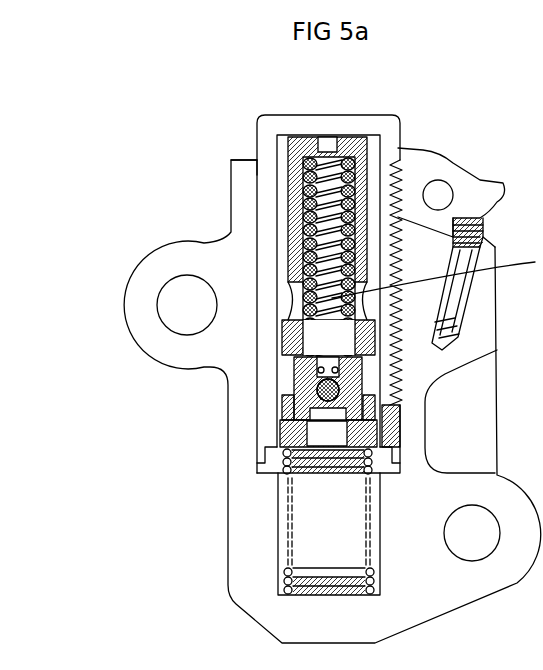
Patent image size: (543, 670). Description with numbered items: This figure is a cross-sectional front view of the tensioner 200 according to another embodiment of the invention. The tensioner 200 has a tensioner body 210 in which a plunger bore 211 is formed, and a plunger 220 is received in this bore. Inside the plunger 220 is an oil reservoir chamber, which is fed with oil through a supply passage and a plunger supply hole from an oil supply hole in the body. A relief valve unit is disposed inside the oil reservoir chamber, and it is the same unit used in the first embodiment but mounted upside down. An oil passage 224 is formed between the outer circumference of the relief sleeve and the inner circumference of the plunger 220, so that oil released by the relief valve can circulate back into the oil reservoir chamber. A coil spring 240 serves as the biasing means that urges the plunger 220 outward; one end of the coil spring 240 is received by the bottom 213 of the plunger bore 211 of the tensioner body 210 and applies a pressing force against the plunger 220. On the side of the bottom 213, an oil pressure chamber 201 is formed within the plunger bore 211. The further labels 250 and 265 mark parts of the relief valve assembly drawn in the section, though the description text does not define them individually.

The tensioner 200 is at (100, 88).
The oil pressure chamber 201 is at (320, 503).
The tensioner body 210 is at (223, 230).
The plunger bore 211 is at (255, 164).
The bottom 213 is at (290, 582).
The plunger 220 is at (338, 115).
The oil passage 224 is at (280, 233).
The coil spring 240 is at (285, 572).
The valve body 250 is at (283, 386).
The valve seat block 265 is at (283, 405).